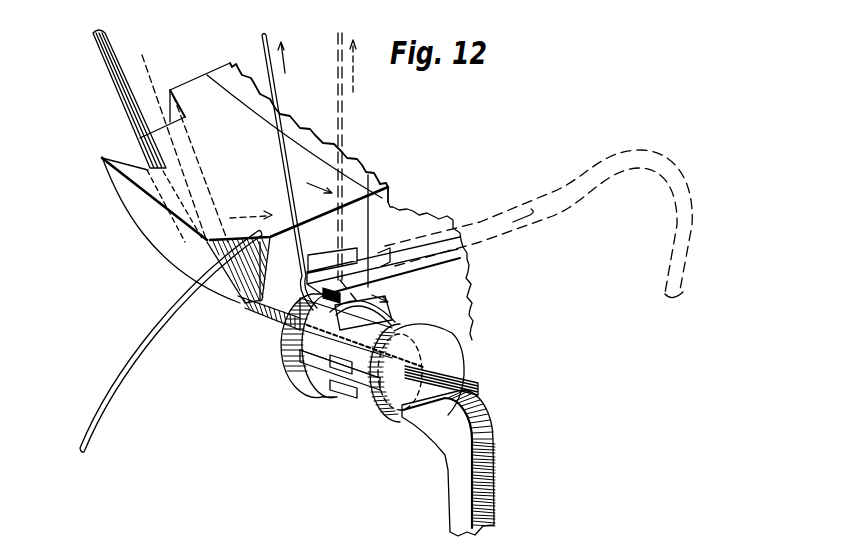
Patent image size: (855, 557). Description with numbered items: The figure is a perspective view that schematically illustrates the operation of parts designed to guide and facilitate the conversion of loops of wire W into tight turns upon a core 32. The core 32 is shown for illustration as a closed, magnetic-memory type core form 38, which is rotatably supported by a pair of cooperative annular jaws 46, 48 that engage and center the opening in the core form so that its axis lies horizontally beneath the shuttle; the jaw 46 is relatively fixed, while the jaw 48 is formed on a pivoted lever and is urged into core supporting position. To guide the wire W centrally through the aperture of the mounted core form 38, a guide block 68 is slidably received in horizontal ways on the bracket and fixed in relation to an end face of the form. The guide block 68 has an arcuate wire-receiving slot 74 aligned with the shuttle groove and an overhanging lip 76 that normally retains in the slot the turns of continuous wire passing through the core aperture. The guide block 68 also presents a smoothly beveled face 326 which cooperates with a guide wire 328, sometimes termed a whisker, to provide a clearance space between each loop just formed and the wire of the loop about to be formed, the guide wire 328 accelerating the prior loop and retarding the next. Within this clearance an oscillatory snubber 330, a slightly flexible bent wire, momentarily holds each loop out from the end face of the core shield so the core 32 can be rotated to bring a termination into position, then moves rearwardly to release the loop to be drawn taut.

The guide block 68 is at (193, 83).
The arcuate wire-receiving slot 74 is at (145, 162).
The smoothly beveled face 326 is at (251, 240).
The guide wire 328 is at (142, 370).
The oscillatory snubber 330 is at (462, 226).
The overhanging lip 76 is at (246, 308).
The annular jaw 46 is at (283, 362).
The annular jaw 48 is at (467, 353).
The core form 38 is at (335, 391).
The core 32 is at (349, 414).
The wire W is at (105, 70).